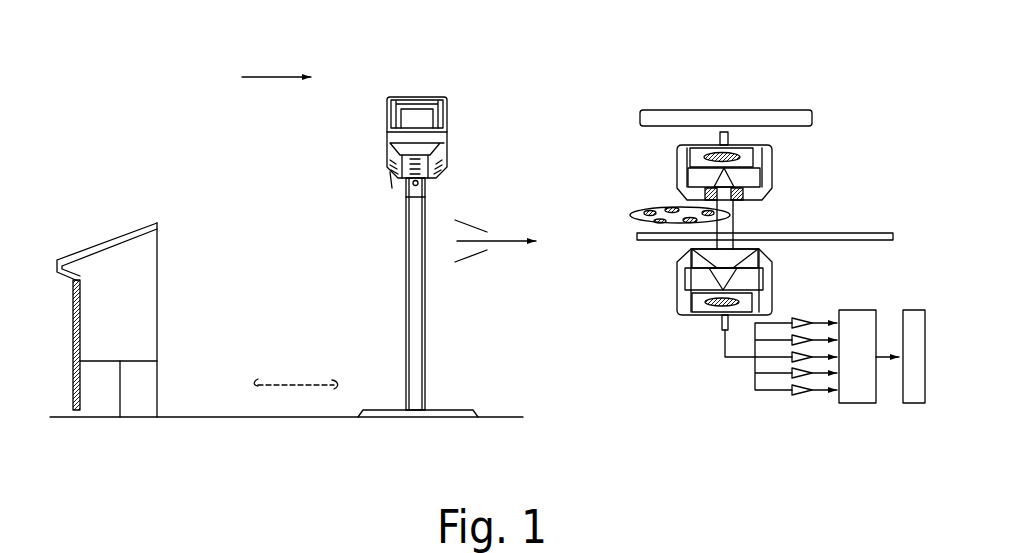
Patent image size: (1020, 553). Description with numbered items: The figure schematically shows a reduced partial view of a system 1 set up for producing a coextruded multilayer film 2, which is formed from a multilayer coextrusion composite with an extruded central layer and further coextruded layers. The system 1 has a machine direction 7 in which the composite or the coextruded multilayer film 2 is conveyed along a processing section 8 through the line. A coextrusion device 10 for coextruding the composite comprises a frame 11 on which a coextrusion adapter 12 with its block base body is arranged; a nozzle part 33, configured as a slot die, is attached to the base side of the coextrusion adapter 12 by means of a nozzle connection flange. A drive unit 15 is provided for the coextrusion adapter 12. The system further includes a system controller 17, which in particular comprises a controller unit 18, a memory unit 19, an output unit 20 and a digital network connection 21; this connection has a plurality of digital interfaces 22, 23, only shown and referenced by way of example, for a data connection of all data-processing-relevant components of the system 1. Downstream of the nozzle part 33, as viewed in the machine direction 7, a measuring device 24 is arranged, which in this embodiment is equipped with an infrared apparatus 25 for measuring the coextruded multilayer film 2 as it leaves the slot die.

The system 1 is at (165, 134).
The coextruded multilayer film 2 is at (866, 232).
The machine direction 7 is at (272, 79).
The processing section 8 is at (494, 238).
The coextrusion device 10 is at (431, 89).
The frame 11 is at (425, 335).
The coextrusion adapter 12 is at (446, 120).
The drive unit 15 is at (384, 153).
The system controller 17 is at (157, 288).
The controller unit 18 is at (143, 375).
The memory unit 19 is at (97, 398).
The output unit 20 is at (113, 238).
The digital network connection 21 is at (297, 389).
The digital interface 22 is at (391, 182).
The digital interface 23 is at (884, 368).
The measuring device 24 is at (786, 88).
The infrared apparatus 25 is at (740, 378).
The nozzle part 33 is at (476, 270).